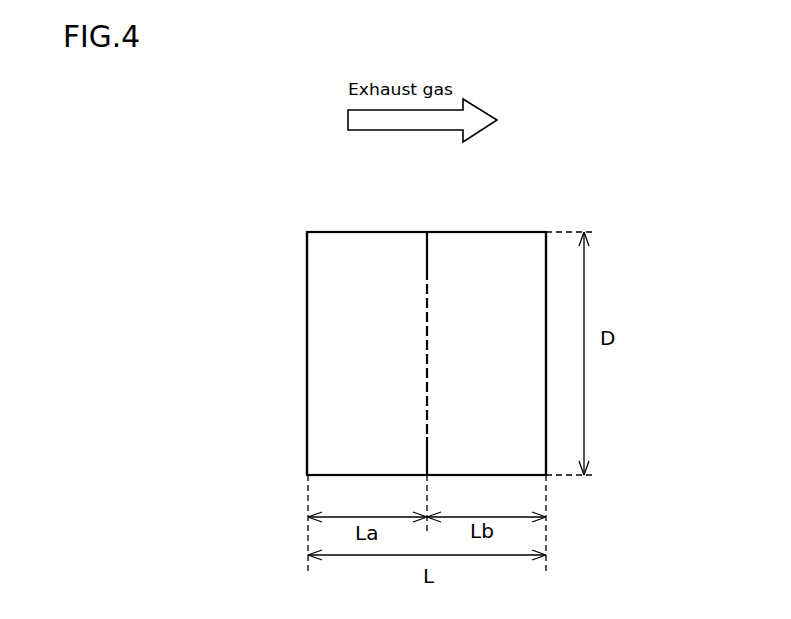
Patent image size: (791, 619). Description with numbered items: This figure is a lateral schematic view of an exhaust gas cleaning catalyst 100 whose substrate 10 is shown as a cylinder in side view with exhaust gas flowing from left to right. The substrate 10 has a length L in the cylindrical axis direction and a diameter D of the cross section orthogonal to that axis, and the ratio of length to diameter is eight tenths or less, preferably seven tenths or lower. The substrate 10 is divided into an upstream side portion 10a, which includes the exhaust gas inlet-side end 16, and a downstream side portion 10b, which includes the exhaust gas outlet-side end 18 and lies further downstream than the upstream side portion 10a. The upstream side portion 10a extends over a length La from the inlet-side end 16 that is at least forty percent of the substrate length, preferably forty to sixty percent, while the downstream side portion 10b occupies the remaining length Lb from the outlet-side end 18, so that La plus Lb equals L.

The exhaust gas cleaning catalyst 100 is at (586, 133).
The substrate 10 is at (452, 232).
The upstream side portion 10a is at (345, 232).
The downstream side portion 10b is at (497, 232).
The exhaust gas inlet-side end 16 is at (308, 447).
The exhaust gas outlet-side end 18 is at (547, 445).